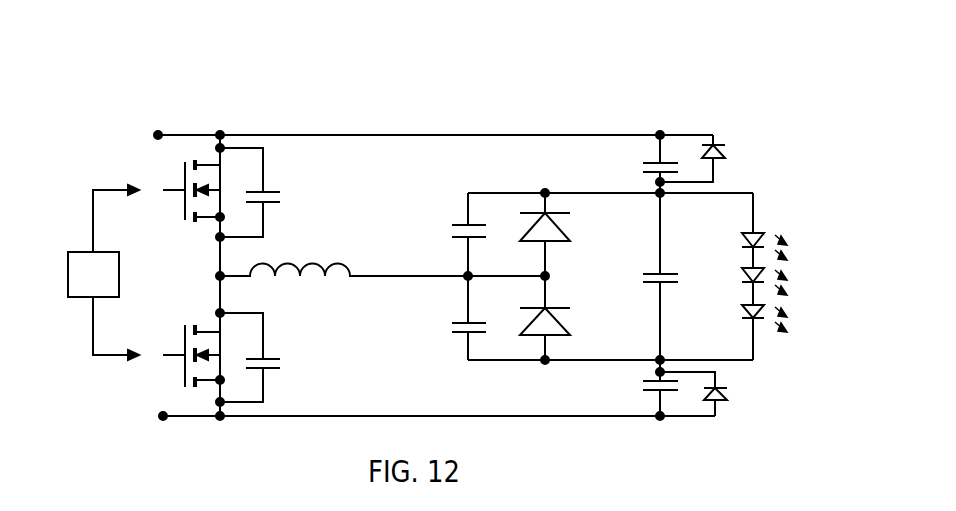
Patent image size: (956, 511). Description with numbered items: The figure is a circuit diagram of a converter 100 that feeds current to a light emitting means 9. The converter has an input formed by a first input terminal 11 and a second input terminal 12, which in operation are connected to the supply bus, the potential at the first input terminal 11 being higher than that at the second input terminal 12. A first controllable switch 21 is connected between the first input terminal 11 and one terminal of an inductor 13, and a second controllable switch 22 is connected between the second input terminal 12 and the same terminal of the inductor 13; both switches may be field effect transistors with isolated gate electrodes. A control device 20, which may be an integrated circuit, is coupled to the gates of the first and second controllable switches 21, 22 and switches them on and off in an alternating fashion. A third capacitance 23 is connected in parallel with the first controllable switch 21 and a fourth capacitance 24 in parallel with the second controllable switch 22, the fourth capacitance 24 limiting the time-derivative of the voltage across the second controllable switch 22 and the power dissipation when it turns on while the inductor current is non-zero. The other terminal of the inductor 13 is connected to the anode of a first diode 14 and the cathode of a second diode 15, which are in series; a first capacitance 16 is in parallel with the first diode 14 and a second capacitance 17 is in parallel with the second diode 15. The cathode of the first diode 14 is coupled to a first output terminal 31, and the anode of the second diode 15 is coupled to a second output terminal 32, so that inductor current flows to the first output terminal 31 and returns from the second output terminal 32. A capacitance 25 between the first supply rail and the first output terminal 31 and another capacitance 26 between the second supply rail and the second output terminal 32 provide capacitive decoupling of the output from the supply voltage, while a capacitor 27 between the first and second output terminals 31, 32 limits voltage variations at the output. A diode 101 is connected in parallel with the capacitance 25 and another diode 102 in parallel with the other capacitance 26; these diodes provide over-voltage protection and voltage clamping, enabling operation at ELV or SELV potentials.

The converter 100 is at (102, 80).
The first input terminal 11 is at (158, 134).
The second input terminal 12 is at (163, 418).
The control device 20 is at (119, 257).
The first controllable switch 21 is at (157, 184).
The second controllable switch 22 is at (166, 371).
The third capacitance 23 is at (282, 191).
The fourth capacitance 24 is at (281, 358).
The inductor 13 is at (333, 267).
The first capacitance 16 is at (452, 225).
The second capacitance 17 is at (452, 323).
The first diode 14 is at (570, 232).
The second diode 15 is at (570, 328).
The capacitance 25 is at (643, 163).
The other capacitance 26 is at (643, 390).
The capacitor 27 is at (645, 274).
The first output terminal 31 is at (663, 198).
The second output terminal 32 is at (665, 358).
The light emitting means 9 is at (772, 222).
The diode 101 is at (726, 153).
The other diode 102 is at (726, 398).